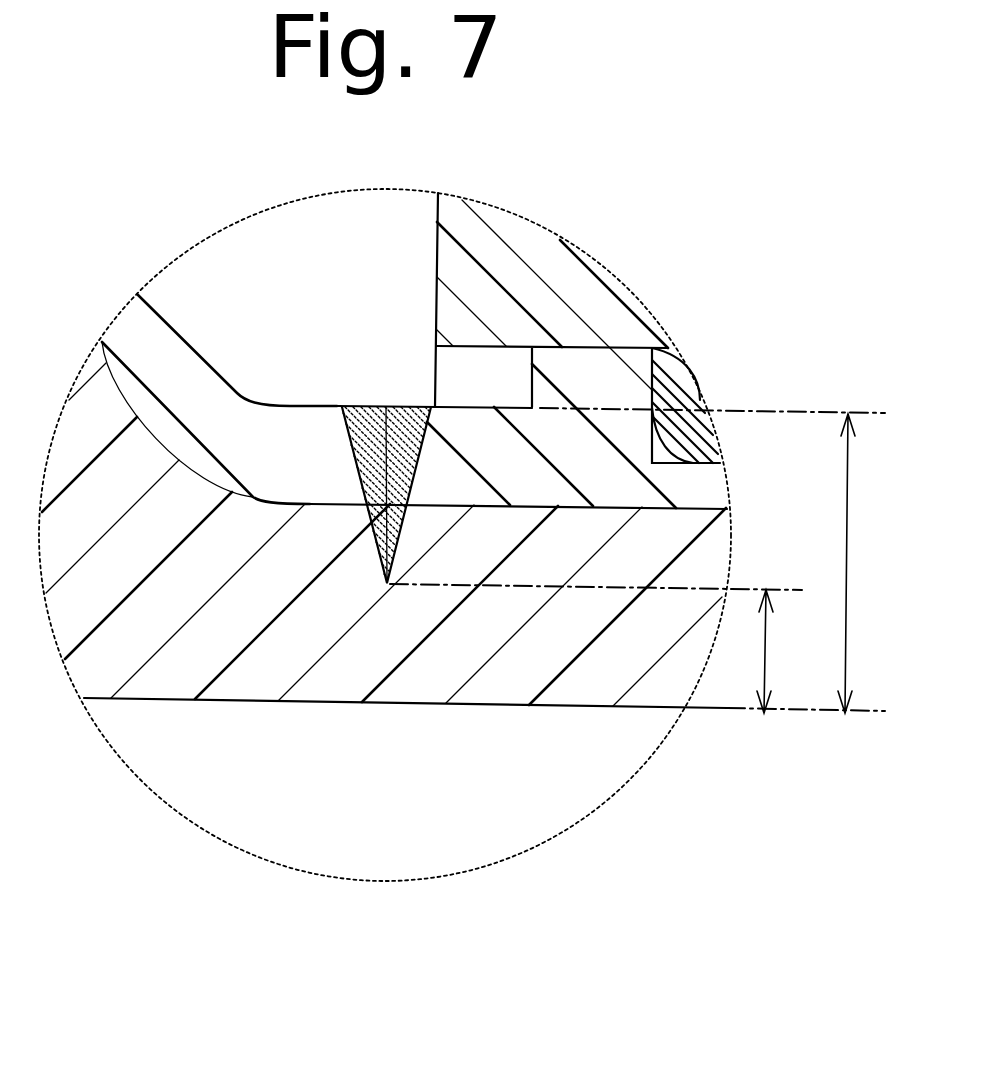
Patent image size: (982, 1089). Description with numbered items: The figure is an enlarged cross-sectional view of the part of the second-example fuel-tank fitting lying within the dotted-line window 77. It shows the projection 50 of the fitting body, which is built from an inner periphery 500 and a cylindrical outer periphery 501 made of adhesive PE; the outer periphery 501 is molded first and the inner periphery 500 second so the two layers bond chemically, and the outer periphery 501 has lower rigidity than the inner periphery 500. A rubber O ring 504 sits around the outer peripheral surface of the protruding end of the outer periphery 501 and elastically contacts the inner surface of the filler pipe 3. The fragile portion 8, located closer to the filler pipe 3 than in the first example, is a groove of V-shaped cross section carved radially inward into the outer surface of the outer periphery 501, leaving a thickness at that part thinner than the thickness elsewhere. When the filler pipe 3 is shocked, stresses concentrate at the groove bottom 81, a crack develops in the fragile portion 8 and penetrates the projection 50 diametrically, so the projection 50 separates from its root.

The window 77 is at (232, 227).
The filler pipe 3 is at (540, 250).
The O ring 504 is at (703, 410).
The groove bottom 81 is at (384, 432).
The outer periphery 501 is at (330, 427).
The fragile portion 8 is at (385, 628).
The inner periphery 500 is at (433, 668).
The projection 50 is at (609, 763).